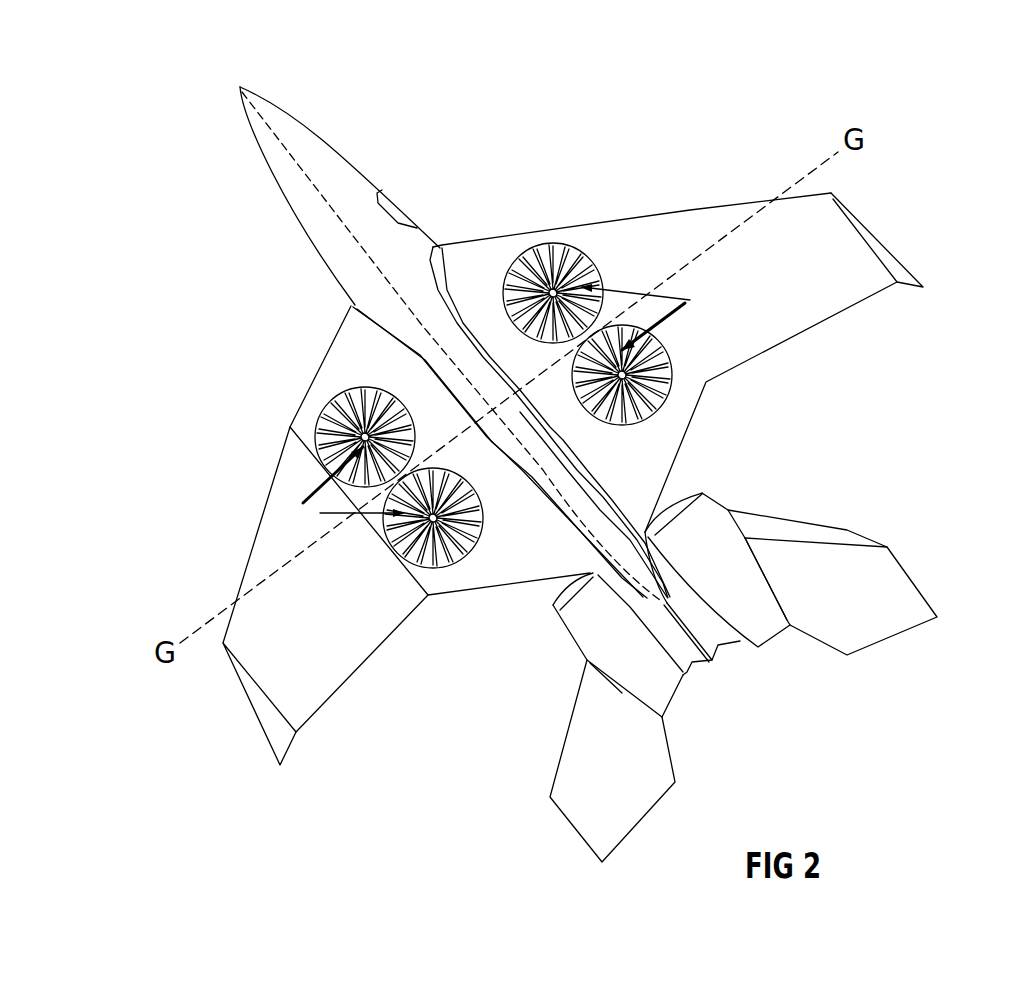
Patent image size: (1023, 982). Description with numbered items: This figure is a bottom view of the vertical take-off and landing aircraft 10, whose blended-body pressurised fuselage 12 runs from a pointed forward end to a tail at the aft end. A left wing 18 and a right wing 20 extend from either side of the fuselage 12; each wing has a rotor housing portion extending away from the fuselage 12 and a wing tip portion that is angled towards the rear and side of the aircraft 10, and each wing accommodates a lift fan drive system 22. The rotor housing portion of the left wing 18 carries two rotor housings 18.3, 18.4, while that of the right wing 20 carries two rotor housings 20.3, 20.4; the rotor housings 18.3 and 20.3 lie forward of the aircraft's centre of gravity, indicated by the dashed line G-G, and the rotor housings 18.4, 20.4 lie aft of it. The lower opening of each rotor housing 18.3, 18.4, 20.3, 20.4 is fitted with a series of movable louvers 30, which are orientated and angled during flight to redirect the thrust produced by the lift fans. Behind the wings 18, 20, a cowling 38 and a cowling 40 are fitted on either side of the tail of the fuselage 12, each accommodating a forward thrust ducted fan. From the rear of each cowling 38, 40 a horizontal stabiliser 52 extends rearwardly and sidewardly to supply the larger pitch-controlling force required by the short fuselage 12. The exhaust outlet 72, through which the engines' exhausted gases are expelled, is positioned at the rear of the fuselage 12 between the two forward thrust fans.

The VTOL aircraft 10 is at (685, 128).
The fuselage 12 is at (357, 173).
The left wing 18 is at (708, 237).
The rotor housing 18.3 is at (565, 233).
The rotor housing 18.4 is at (674, 383).
The right wing 20 is at (275, 563).
The rotor housing 20.3 is at (318, 408).
The rotor housing 20.4 is at (431, 569).
The lift fan drive system 22 is at (512, 414).
The movable louvers 30 is at (538, 260).
The cowling 38 is at (717, 535).
The cowling 40 is at (583, 630).
The horizontal stabiliser 52 is at (880, 597).
The exhaust outlet 72 is at (712, 662).